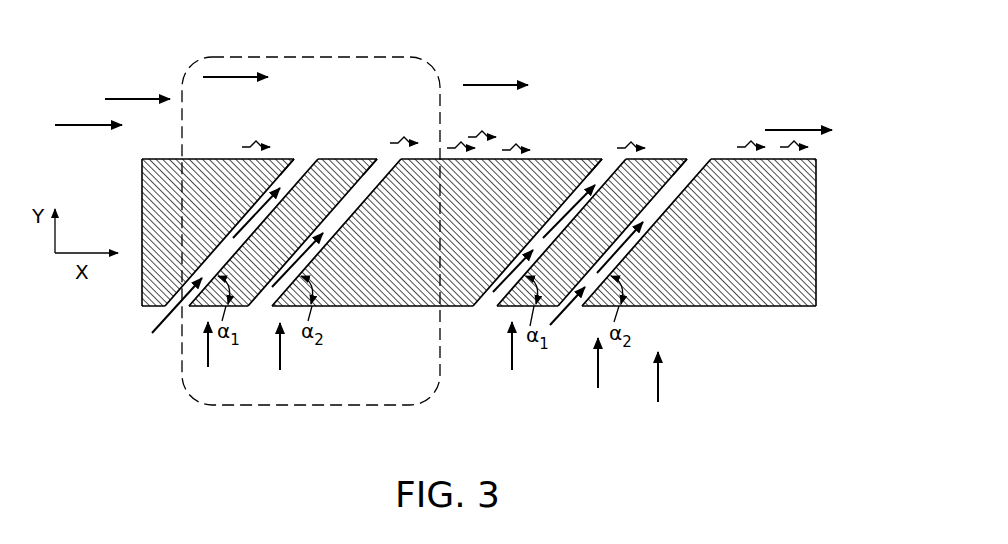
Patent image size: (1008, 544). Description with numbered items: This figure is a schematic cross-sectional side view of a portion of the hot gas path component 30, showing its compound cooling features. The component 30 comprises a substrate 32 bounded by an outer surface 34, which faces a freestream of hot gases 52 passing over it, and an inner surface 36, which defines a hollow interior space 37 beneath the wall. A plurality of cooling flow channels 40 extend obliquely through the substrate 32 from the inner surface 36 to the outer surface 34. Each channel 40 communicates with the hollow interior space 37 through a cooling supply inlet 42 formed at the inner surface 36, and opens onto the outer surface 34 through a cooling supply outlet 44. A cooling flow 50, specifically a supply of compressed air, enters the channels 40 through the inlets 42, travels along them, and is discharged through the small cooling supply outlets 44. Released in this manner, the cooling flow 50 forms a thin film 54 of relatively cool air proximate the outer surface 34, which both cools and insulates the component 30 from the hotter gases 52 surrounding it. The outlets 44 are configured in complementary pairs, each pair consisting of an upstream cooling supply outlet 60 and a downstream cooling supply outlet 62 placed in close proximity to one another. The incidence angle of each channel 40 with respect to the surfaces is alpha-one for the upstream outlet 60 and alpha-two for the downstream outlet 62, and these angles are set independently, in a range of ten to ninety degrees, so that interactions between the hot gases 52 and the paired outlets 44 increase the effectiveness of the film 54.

The hot gas path component 30 is at (794, 78).
The substrate 32 is at (818, 185).
The outer surface 34 is at (720, 158).
The inner surface 36 is at (400, 308).
The hollow interior space 37 is at (555, 395).
The cooling flow channels 40 is at (258, 193).
The cooling supply inlets 42 is at (262, 312).
The cooling supply outlets 44 is at (503, 106).
The cooling flow 50 is at (157, 322).
The freestream of hot gases 52 is at (70, 123).
The film of relatively cool air 54 is at (242, 147).
The upstream cooling supply outlet 60 is at (299, 154).
The downstream cooling supply outlet 62 is at (383, 148).